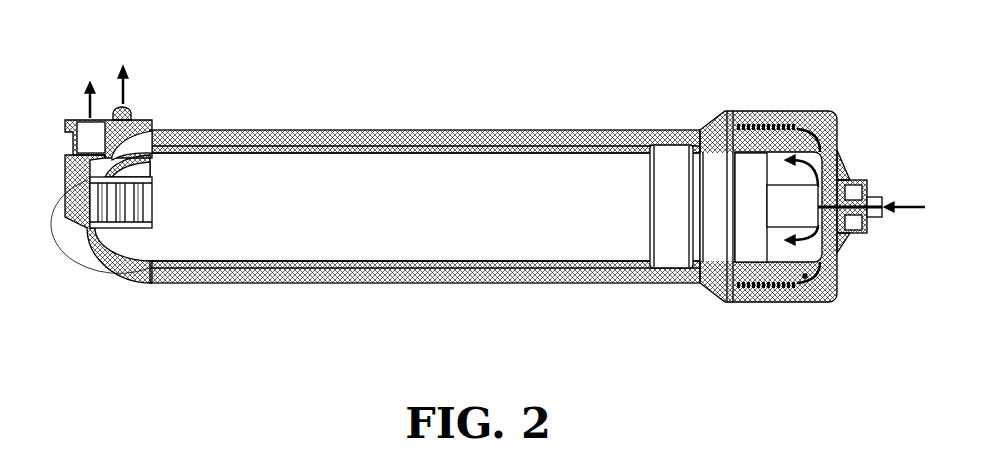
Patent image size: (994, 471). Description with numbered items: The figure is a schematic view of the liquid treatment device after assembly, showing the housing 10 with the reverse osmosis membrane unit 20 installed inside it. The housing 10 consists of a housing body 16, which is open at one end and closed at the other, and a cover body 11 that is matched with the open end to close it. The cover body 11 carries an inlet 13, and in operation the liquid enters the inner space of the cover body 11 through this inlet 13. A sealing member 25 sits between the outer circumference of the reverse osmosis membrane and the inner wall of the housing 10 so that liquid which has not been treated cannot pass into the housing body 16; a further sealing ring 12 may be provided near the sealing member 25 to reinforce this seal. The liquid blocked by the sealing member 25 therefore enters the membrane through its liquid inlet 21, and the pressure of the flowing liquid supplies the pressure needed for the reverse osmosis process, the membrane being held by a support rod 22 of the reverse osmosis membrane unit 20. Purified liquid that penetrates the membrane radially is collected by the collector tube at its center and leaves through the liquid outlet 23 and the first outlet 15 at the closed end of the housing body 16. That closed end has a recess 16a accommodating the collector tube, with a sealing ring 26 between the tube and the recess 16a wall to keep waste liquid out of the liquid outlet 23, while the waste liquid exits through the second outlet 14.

The housing 10 is at (349, 122).
The cover body 11 is at (763, 290).
The sealing ring 12 is at (805, 137).
The inlet 13 is at (862, 177).
The second outlet 14 is at (132, 118).
The first outlet 15 is at (82, 118).
The housing body 16 is at (470, 140).
The recess 16a is at (132, 237).
The reverse osmosis membrane unit 20 is at (538, 187).
The liquid inlet 21 is at (768, 248).
The support rod 22 is at (778, 185).
The liquid outlet 23 is at (96, 217).
The sealing member 25 is at (670, 155).
The sealing ring 26 is at (113, 228).